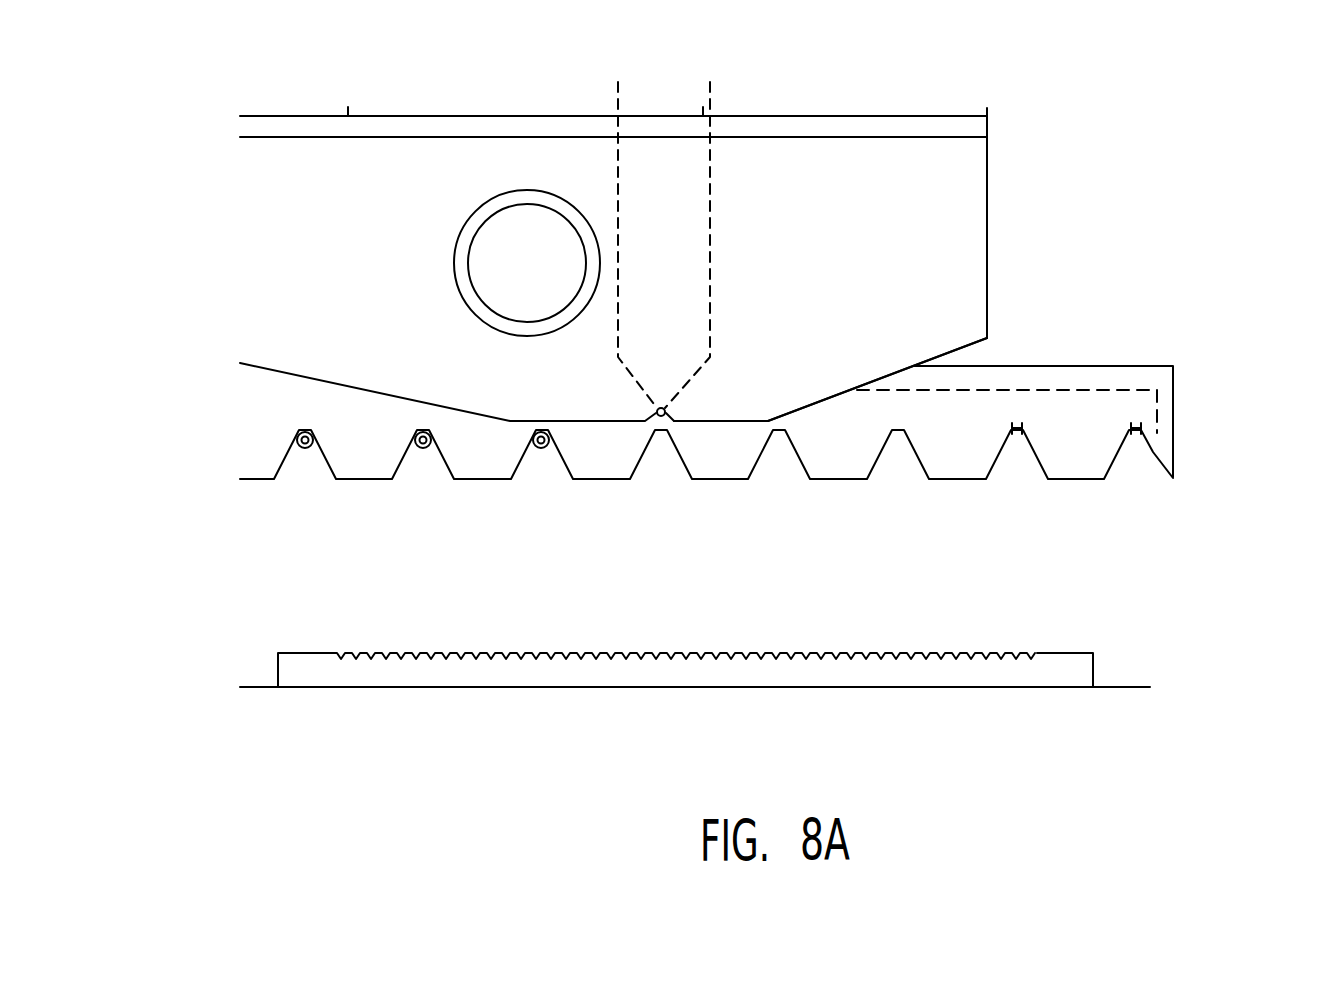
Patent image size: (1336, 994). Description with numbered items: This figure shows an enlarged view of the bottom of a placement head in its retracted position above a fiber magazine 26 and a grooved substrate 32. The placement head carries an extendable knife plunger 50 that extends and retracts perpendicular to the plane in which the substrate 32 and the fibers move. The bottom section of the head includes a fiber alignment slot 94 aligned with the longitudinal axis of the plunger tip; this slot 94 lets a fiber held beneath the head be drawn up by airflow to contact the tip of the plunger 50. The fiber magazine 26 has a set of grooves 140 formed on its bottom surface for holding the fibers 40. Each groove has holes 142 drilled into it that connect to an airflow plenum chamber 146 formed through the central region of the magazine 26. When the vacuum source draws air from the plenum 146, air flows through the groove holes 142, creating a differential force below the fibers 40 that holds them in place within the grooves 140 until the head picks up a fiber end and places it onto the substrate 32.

The knife plunger 50 is at (710, 167).
The fiber alignment slot 94 is at (673, 408).
The fiber magazine 26 is at (1176, 410).
The airflow plenum chamber 146 is at (1077, 392).
The set of grooves 140 is at (266, 493).
The fibers 40 is at (541, 455).
The groove holes 142 is at (1015, 442).
The grooved substrate 32 is at (1095, 668).